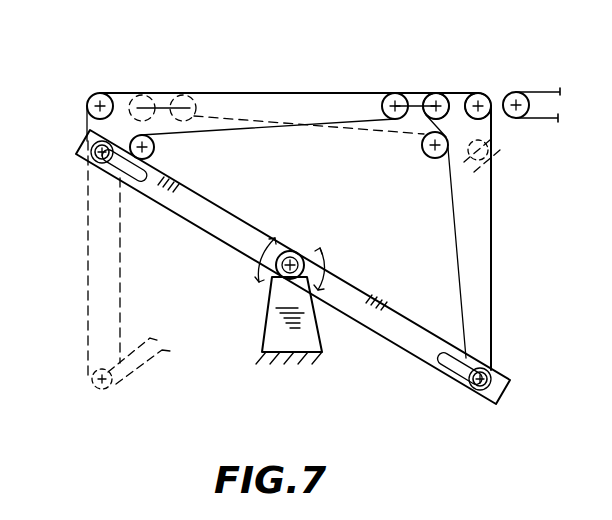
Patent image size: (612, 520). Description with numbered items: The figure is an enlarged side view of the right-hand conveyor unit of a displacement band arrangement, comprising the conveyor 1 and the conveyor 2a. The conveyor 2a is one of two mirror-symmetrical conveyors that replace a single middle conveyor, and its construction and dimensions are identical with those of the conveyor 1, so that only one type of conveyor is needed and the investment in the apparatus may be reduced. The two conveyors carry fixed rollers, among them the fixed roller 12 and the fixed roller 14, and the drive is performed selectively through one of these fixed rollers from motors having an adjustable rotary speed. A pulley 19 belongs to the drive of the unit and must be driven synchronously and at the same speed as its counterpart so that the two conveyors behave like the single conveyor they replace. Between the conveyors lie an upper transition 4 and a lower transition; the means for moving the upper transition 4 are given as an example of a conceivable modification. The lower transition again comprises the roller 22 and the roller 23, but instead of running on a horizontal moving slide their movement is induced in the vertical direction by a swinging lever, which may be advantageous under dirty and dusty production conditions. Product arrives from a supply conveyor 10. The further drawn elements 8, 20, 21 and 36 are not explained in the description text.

The drive arrangement 1 is at (460, 92).
The belt / drawing frame 2a is at (268, 92).
The pulley 4 is at (414, 100).
The pulley 8 is at (500, 92).
The endless belt 10 is at (540, 92).
The pulley 12 is at (494, 98).
The pulley 14 is at (424, 156).
The pulley 19 is at (155, 150).
The pulley 20 is at (395, 92).
The pulley 21 is at (435, 92).
The pivot pin 22 is at (505, 384).
The pivot pin 23 is at (88, 142).
The pulley 36 is at (100, 92).